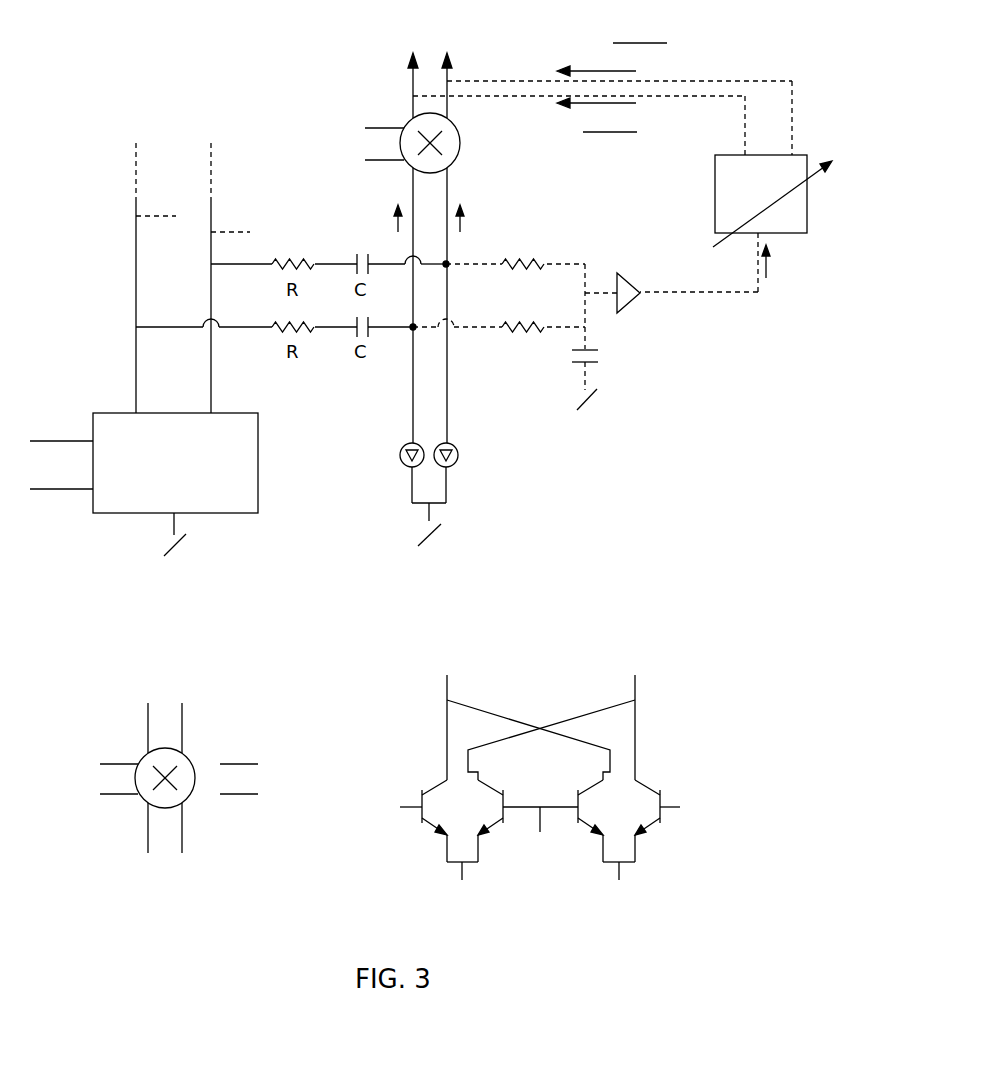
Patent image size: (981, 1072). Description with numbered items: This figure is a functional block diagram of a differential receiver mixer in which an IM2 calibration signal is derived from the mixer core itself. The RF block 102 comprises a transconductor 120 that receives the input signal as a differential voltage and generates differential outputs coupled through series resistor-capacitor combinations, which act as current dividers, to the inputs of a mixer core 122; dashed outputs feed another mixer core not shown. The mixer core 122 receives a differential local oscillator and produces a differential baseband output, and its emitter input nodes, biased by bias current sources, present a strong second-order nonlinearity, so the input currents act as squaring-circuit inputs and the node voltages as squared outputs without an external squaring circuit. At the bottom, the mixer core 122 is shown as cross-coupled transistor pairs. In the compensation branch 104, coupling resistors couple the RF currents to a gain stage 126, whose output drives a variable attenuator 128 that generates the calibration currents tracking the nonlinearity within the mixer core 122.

The RF block 102 is at (466, 288).
The compensation branch 104 is at (615, 216).
The transconductor 120 is at (222, 513).
The mixer core 122 is at (410, 118).
The gain stage 126 is at (631, 279).
The variable attenuator 128 is at (715, 197).